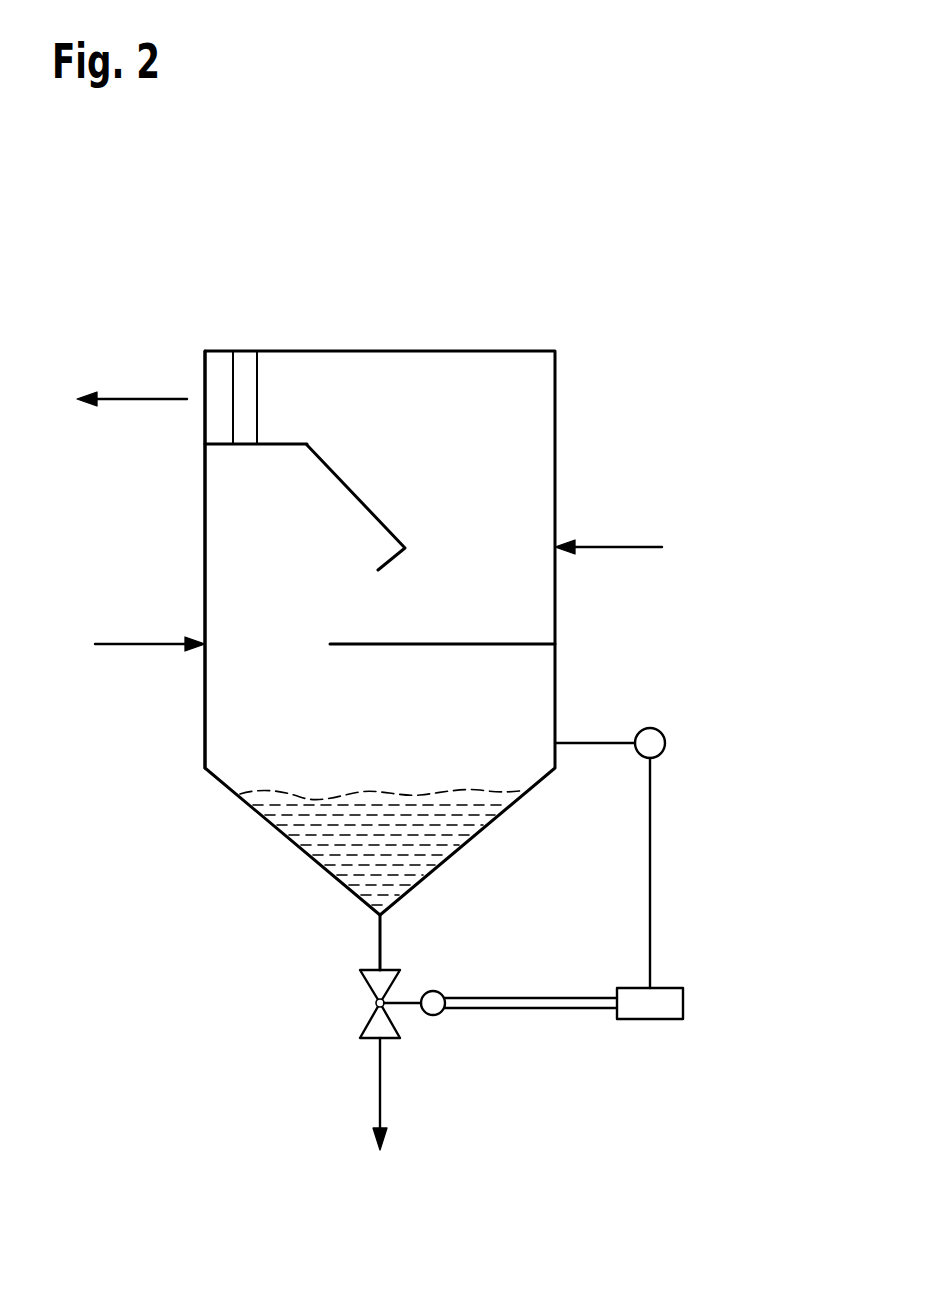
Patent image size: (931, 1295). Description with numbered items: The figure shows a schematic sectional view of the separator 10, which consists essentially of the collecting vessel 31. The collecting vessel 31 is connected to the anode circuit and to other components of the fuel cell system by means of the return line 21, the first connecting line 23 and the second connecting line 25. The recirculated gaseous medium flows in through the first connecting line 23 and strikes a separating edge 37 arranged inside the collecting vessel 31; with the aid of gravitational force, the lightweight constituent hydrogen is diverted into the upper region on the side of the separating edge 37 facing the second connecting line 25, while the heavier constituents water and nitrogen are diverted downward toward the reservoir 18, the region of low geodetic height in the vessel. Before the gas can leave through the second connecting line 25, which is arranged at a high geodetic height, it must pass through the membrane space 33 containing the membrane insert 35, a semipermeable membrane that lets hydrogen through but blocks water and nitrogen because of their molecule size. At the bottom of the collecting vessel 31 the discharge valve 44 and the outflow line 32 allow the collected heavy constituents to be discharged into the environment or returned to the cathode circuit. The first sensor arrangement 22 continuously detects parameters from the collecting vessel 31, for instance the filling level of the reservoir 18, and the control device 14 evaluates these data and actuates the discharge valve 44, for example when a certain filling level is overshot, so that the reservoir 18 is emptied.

The separator 10 is at (439, 298).
The control device 14 is at (680, 1004).
The reservoir 18 is at (313, 836).
The return line 21 is at (120, 646).
The first sensor arrangement 22 is at (668, 743).
The first connecting line 23 is at (632, 547).
The second connecting line 25 is at (118, 400).
The collecting vessel 31 is at (211, 573).
The outflow line 32 is at (378, 1086).
The membrane space 33 is at (208, 366).
The membrane insert 35 is at (233, 383).
The separating edge 37 is at (413, 550).
The discharge valve 44 is at (374, 1001).